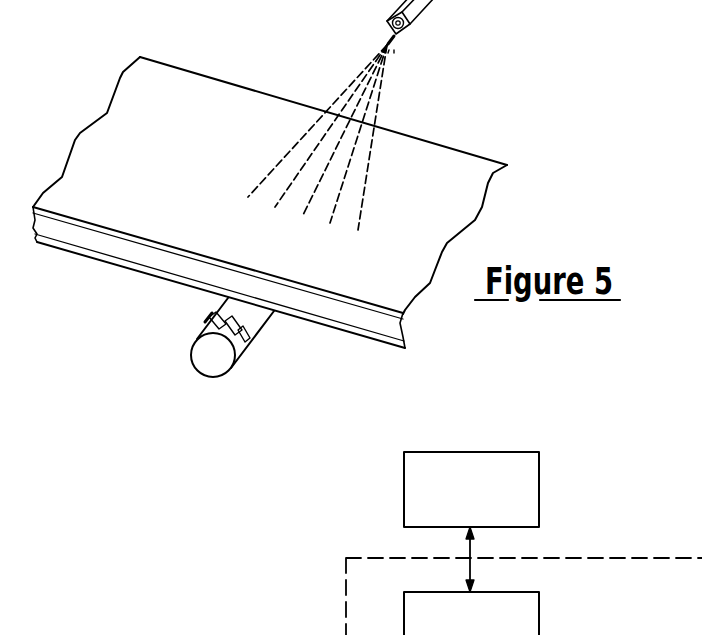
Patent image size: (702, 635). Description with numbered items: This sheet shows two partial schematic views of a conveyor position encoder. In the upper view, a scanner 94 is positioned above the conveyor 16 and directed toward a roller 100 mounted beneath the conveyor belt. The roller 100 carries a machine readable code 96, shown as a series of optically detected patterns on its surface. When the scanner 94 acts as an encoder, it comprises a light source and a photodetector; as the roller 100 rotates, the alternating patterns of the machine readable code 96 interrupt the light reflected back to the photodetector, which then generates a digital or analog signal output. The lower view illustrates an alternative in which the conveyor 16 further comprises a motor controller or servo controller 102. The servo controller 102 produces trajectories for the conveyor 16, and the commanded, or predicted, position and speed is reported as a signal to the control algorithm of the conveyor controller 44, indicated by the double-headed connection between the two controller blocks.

In FIG. 5, the conveyor 16 is at (451, 148).
In FIG. 5, the scanner 94 is at (417, 17).
In FIG. 5, the machine readable code 96 is at (249, 340).
In FIG. 5, the roller 100 is at (236, 368).
In FIG. 6, the conveyor controller 44 is at (539, 488).
In FIG. 6, the motor controller or servo controller 102 is at (539, 625).